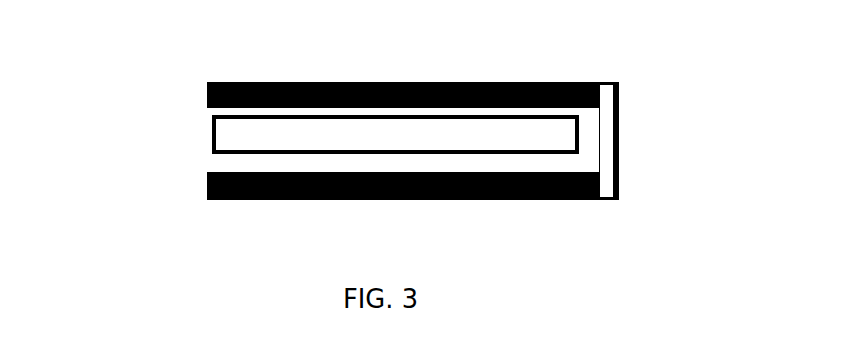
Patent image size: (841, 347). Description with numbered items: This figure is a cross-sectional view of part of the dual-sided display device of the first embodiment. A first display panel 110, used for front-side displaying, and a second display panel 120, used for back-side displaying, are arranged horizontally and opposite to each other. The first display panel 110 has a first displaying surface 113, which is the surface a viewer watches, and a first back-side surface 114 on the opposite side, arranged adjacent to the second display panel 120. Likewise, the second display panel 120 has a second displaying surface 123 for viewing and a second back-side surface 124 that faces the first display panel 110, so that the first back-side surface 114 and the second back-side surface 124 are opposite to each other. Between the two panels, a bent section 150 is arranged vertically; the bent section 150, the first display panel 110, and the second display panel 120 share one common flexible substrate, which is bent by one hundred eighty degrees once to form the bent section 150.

The first display panel 110 is at (314, 80).
The first displaying surface 113 is at (457, 81).
The first back-side surface 114 is at (207, 103).
The second display panel 120 is at (206, 184).
The second displaying surface 123 is at (452, 200).
The second back-side surface 124 is at (480, 172).
The bent section 150 is at (610, 125).